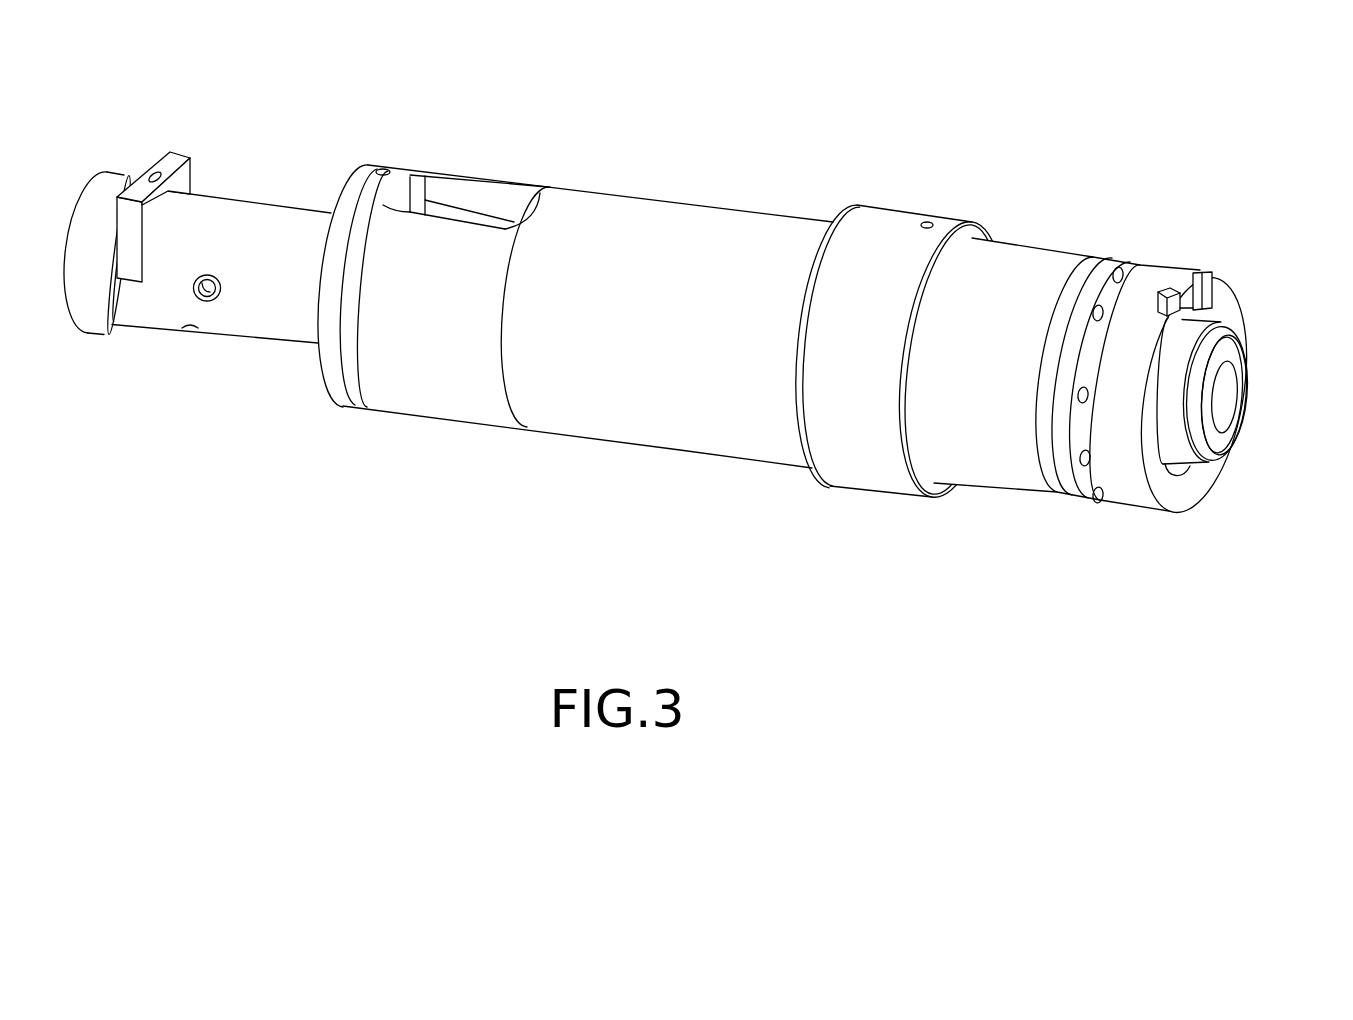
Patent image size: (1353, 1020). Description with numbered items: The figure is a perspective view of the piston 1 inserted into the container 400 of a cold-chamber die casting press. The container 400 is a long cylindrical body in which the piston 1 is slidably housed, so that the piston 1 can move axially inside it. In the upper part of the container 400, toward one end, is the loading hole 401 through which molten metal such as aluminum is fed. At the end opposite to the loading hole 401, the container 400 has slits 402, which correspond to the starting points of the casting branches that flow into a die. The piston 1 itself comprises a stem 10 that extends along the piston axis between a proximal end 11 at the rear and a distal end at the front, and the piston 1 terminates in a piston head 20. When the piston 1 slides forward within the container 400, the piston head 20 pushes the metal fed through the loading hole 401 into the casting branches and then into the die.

The piston 1 is at (277, 367).
The stem 10 is at (253, 298).
The proximal end 11 is at (270, 203).
The container 400 is at (657, 257).
The loading hole 401 is at (447, 196).
The slits 402 is at (1164, 288).
The piston head 20 is at (1237, 462).